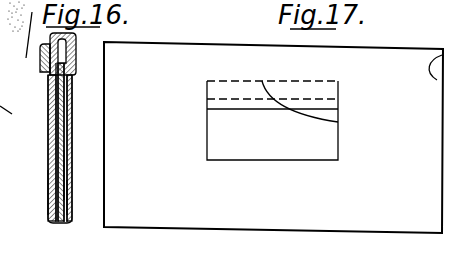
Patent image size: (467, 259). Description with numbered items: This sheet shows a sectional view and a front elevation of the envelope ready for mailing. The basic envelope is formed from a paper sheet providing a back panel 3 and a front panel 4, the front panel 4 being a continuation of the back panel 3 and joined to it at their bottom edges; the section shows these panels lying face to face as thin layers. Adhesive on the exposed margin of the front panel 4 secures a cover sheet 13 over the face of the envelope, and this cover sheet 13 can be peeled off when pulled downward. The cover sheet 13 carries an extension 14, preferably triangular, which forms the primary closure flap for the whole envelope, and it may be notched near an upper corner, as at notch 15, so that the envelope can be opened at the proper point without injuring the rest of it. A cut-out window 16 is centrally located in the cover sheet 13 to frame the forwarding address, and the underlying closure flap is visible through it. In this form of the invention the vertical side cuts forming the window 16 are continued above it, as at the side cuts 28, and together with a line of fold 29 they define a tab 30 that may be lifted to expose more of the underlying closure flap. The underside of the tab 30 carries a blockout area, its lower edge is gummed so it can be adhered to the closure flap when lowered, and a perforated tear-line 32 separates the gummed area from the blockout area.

In FIG. 16, the back panel 3 is at (70, 177).
In FIG. 16, the front panel 4 is at (67, 203).
In FIG. 16, the cover sheet 13 is at (0, 192).
In FIG. 17, the cover sheet 13 is at (273, 220).
In FIG. 16, the extension 14 is at (77, 77).
In FIG. 16, the notch 15 is at (15, 116).
In FIG. 17, the notch 15 is at (436, 81).
In FIG. 16, the cut-out window 16 is at (46, 152).
In FIG. 17, the cut-out window 16 is at (340, 161).
In FIG. 17, the vertical side cuts 28 is at (207, 101).
In FIG. 16, the line of fold 29 is at (47, 75).
In FIG. 17, the line of fold 29 is at (338, 123).
In FIG. 16, the tab 30 is at (42, 62).
In FIG. 17, the tab 30 is at (338, 88).
In FIG. 17, the perforated tear-line 32 is at (297, 100).